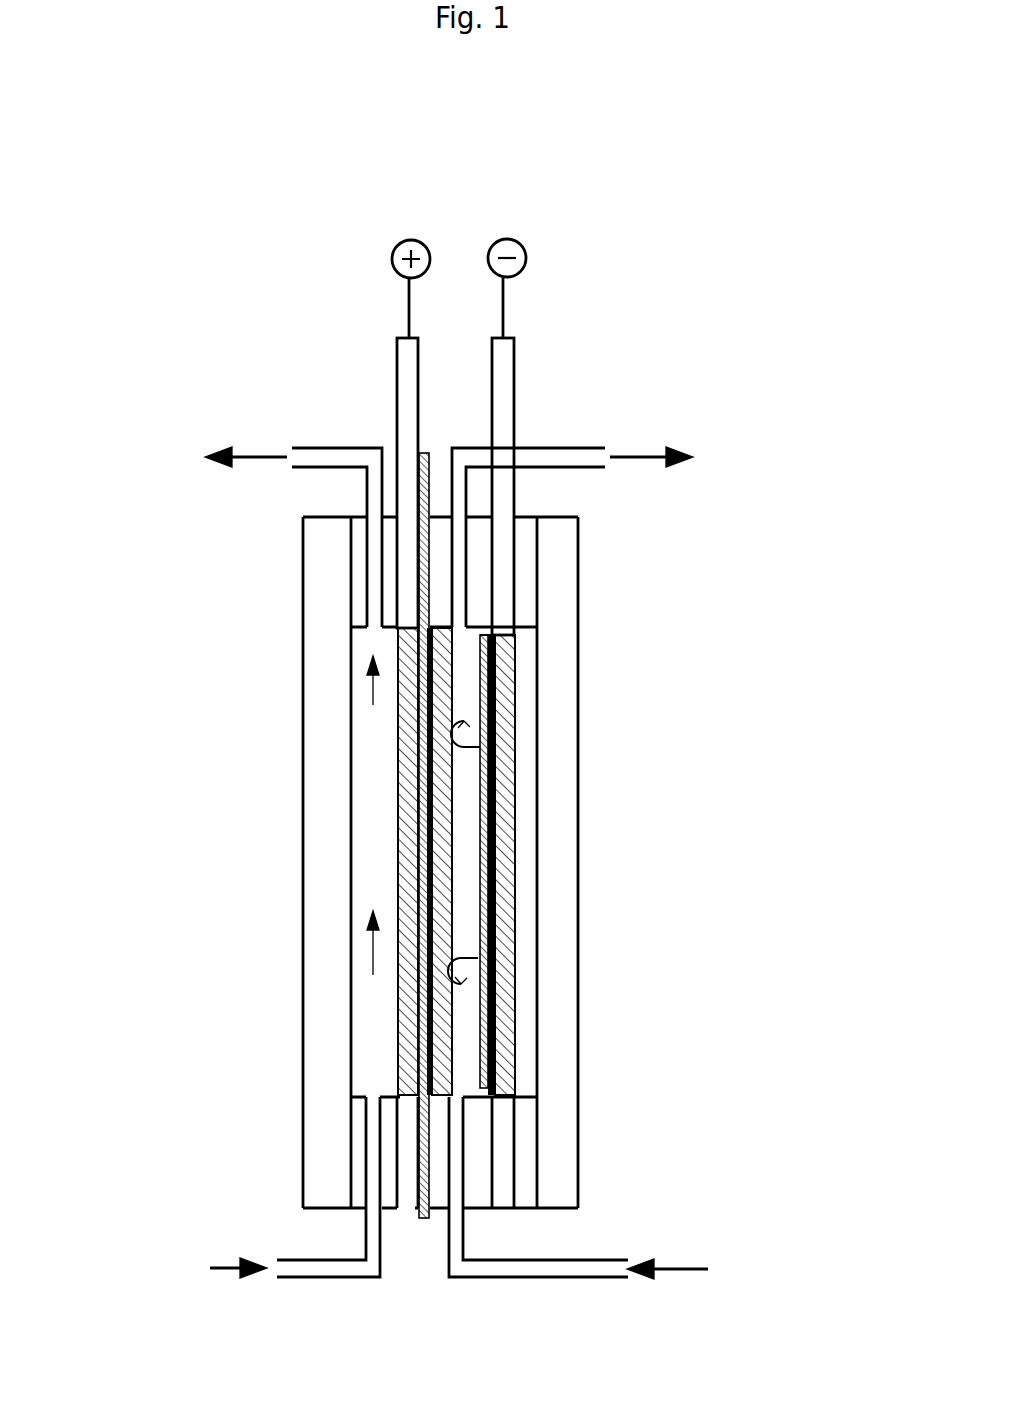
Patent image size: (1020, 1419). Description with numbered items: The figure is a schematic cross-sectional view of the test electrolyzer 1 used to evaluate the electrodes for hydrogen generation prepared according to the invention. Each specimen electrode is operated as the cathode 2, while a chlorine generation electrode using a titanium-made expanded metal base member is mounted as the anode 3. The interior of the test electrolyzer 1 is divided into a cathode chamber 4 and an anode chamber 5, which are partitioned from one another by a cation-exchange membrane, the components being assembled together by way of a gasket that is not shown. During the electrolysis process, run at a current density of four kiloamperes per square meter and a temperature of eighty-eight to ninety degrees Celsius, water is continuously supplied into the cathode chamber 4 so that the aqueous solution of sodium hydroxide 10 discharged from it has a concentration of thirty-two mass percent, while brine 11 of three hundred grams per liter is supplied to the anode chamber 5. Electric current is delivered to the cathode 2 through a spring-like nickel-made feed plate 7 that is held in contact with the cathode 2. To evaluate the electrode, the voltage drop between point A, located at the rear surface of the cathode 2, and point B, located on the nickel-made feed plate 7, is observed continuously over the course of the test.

The test electrolyzer 1 is at (170, 308).
The cathode 2 is at (438, 700).
The anode 3 is at (397, 747).
The cathode chamber 4 is at (467, 790).
The anode chamber 5 is at (373, 846).
The feed plate 7 is at (490, 808).
The aqueous solution of sodium hydroxide 10 is at (642, 448).
The brine 11 is at (240, 1257).
The point A is at (452, 895).
The point B is at (485, 867).